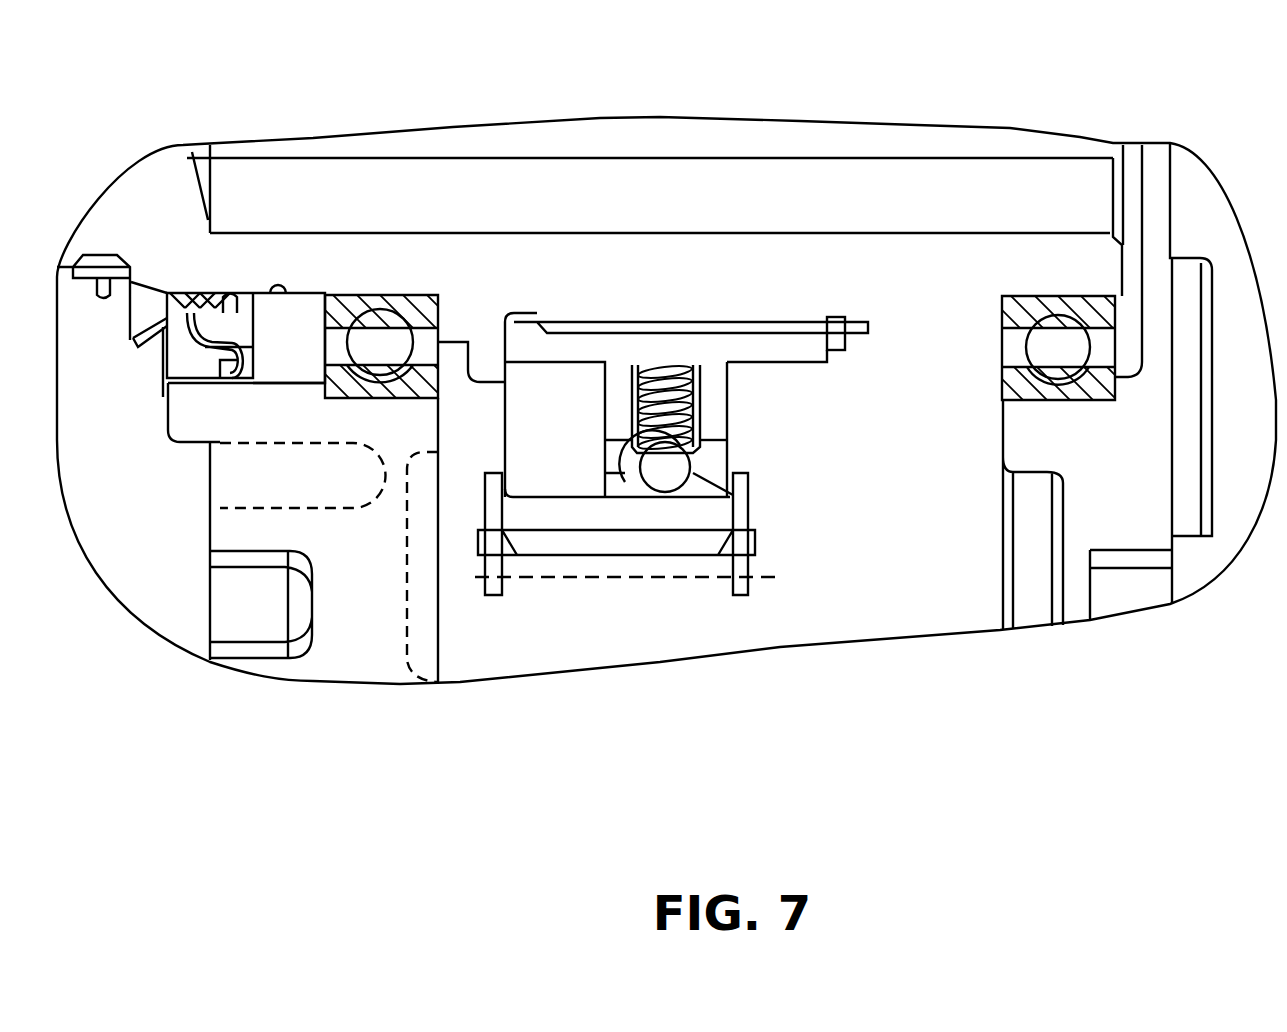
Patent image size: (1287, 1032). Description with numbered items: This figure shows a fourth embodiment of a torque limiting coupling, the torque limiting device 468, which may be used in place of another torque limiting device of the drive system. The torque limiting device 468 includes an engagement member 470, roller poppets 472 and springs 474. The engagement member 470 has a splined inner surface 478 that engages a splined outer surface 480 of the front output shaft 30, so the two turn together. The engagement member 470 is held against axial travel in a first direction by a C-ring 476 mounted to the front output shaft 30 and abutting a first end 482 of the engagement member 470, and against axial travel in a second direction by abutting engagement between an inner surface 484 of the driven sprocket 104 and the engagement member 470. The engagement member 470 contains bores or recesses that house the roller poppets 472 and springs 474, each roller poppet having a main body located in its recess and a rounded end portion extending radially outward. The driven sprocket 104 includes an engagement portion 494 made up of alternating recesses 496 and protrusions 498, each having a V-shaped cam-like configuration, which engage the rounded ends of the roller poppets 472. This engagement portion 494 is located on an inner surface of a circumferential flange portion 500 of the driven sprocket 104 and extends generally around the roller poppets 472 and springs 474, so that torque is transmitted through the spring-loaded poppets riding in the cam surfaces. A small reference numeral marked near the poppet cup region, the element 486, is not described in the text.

The front output shaft 30 is at (270, 258).
The splined inner surface 478 is at (507, 322).
The springs 474 is at (656, 387).
The splined outer surface 480 is at (765, 323).
The C-ring 476 is at (840, 318).
The first end 482 is at (847, 350).
The engagement member 470 is at (780, 350).
The engagement portion 494 is at (715, 469).
The torque limiting device 468 is at (842, 488).
The recesses 496 is at (700, 497).
The protrusions 498 is at (658, 450).
The circumferential flange portion 500 is at (655, 513).
The driven sprocket 104 is at (620, 513).
The cup 486 is at (605, 432).
The roller poppets 472 is at (620, 403).
The inner surface 484 is at (612, 390).